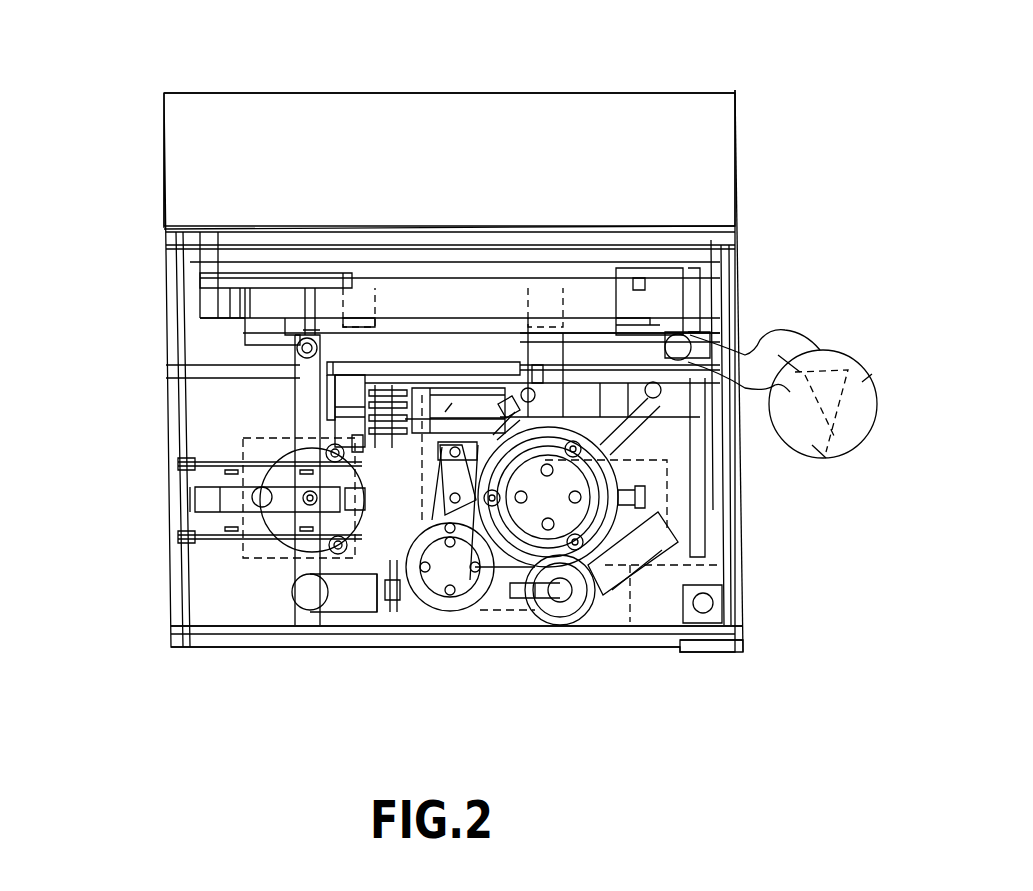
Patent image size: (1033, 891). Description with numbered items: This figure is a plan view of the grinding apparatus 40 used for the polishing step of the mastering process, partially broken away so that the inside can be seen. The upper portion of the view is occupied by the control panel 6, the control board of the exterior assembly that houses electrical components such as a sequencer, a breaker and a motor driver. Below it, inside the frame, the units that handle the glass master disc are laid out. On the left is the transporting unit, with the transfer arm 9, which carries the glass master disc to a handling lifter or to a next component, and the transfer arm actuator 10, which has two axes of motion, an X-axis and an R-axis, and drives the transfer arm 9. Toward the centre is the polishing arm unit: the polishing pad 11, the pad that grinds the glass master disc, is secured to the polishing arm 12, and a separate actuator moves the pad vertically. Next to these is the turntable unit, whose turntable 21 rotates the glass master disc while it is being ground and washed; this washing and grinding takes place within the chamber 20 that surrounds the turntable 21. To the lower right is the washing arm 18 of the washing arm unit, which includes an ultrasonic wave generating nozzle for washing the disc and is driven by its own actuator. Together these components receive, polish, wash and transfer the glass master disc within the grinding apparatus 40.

The grinding apparatus 40 is at (117, 44).
The control panel 6 is at (185, 175).
The transfer arm actuator 10 is at (257, 302).
The transfer arm 9 is at (305, 393).
The polishing pad 11 is at (422, 605).
The polishing arm 12 is at (462, 605).
The turntable 21 is at (528, 520).
The washing arm 18 is at (612, 578).
The chamber 20 is at (645, 625).